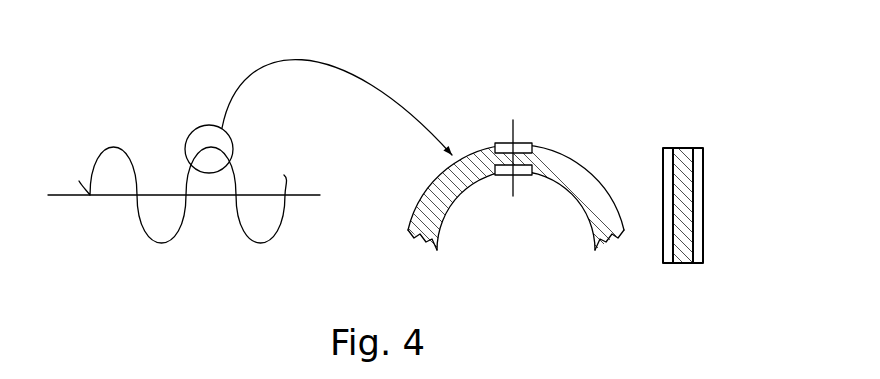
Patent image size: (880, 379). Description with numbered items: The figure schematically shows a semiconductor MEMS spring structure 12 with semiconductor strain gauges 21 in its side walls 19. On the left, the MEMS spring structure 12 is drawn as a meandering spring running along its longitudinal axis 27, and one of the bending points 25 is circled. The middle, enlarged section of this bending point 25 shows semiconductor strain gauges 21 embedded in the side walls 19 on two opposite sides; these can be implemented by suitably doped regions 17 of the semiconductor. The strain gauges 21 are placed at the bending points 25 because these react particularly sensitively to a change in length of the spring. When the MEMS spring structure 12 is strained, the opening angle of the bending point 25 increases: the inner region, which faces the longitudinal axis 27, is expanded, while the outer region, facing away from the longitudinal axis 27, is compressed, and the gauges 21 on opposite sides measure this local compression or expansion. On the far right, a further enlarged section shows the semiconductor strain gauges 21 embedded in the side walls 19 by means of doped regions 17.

The MEMS spring structure 12 is at (113, 136).
The bending points of the spring structure 25 is at (208, 133).
The longitudinal or symmetry axis of the spring structure 27 is at (60, 206).
The doped region 17 is at (532, 132).
The side wall of the spring structure 19 is at (483, 143).
The semiconductor strain gauge 21 is at (503, 143).